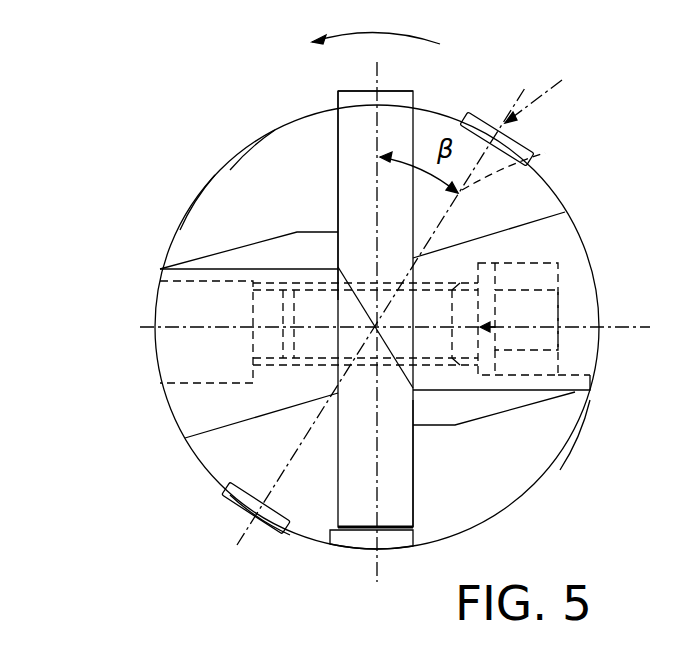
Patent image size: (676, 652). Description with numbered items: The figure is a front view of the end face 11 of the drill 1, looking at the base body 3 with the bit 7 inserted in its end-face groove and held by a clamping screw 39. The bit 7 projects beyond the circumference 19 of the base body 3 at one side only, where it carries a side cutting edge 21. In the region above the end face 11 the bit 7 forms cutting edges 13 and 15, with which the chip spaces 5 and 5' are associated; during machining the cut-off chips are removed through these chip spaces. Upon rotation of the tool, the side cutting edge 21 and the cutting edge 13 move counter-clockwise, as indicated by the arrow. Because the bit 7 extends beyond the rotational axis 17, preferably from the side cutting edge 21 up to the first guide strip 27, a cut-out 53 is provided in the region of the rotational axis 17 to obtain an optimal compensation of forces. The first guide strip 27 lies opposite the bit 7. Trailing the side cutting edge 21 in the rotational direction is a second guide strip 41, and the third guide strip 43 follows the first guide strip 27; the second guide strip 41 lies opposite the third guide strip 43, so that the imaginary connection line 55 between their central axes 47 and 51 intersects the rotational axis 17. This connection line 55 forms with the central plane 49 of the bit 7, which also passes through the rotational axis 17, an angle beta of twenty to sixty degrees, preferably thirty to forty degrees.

The drill 1 is at (132, 307).
The base body 3 is at (190, 247).
The chip space 5 is at (219, 139).
The chip space 5' is at (586, 435).
The bit 7 is at (345, 236).
The end face 11 is at (478, 252).
The cutting edge 13 is at (338, 180).
The cutting edge 15 is at (413, 478).
The rotational axis 17 is at (377, 327).
The circumference 19 is at (197, 200).
The side cutting edge 21 is at (338, 91).
The first guide strip 27 is at (413, 548).
The clamping screw 39 is at (550, 278).
The second guide strip 41 is at (473, 118).
The third guide strip 43 is at (238, 512).
The central axis 47 is at (548, 86).
The central plane 49 is at (385, 440).
The central axis 51 is at (252, 530).
The cut-out 53 is at (373, 298).
The imaginary connection line 55 is at (548, 152).